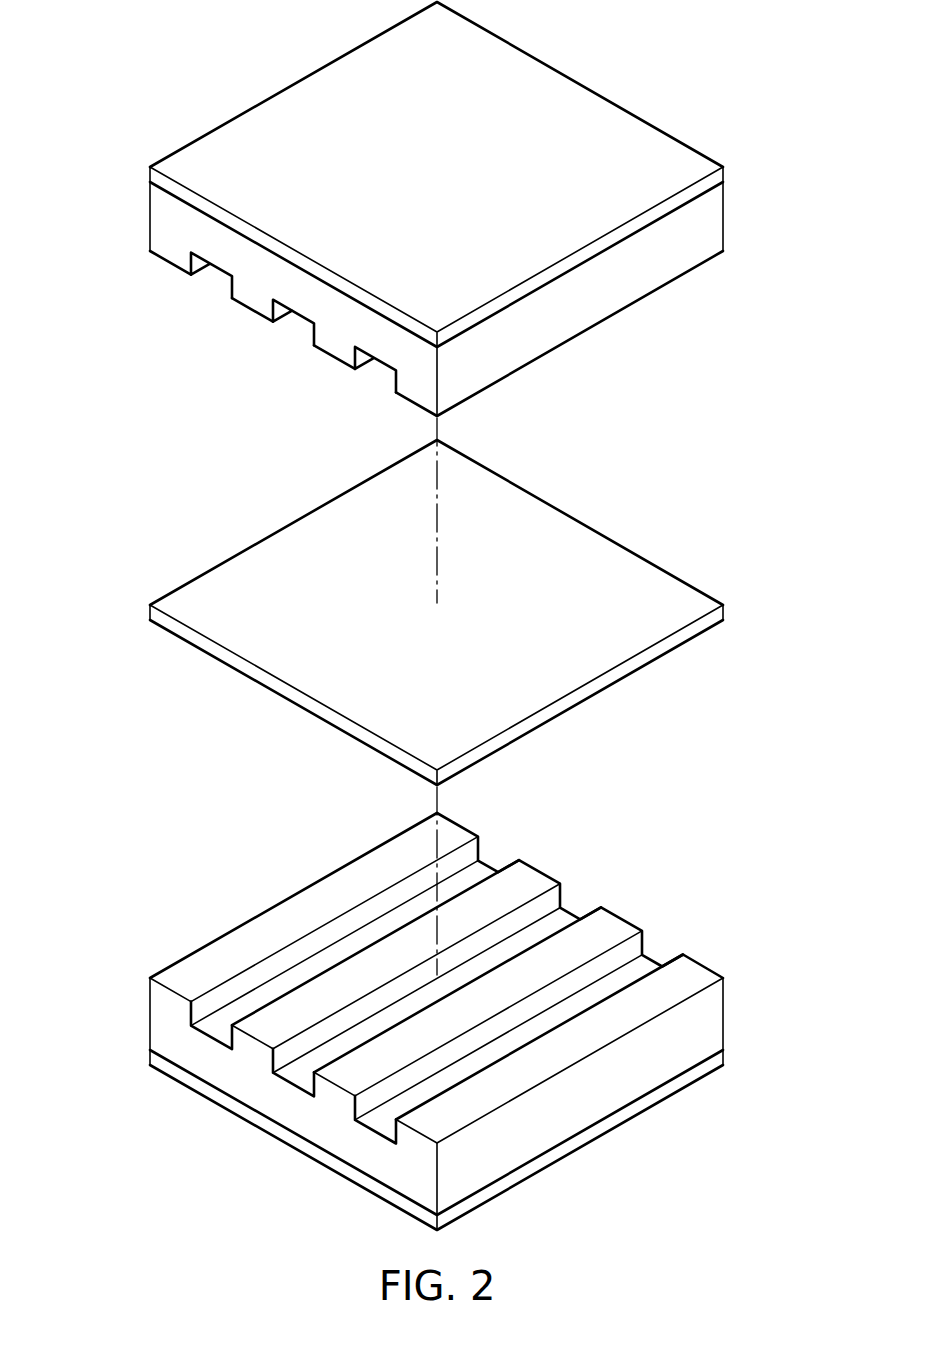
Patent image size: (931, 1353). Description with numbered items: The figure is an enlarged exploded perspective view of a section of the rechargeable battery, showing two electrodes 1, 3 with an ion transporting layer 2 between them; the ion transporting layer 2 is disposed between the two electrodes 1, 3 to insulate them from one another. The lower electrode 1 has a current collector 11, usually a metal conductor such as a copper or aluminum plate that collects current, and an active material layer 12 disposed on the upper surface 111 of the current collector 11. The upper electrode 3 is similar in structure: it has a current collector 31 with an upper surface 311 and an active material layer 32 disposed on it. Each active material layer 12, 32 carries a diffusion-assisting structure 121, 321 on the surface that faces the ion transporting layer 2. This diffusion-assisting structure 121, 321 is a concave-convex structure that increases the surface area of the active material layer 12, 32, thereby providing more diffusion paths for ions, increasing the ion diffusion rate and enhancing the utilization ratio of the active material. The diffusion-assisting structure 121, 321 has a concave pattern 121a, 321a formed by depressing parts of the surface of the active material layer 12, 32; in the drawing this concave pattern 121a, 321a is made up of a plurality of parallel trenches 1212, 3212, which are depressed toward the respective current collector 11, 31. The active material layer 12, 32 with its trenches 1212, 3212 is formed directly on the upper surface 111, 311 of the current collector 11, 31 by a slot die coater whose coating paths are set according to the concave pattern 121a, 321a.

The electrode 1 is at (444, 993).
The current collector 11 is at (421, 1140).
The upper surface 111 is at (198, 1072).
The active material layer 12 is at (415, 986).
The diffusion-assisting structure 121 is at (446, 950).
The concave pattern 121a is at (470, 950).
The trench 1212 is at (750, 880).
The ion transporting layer 2 is at (748, 608).
The electrode 3 is at (435, 240).
The current collector 31 is at (400, 174).
The upper surface 311 is at (167, 192).
The active material layer 32 is at (392, 330).
The diffusion-assisting structure 321 is at (392, 364).
The concave pattern 321a is at (261, 365).
The trench 3212 is at (328, 470).